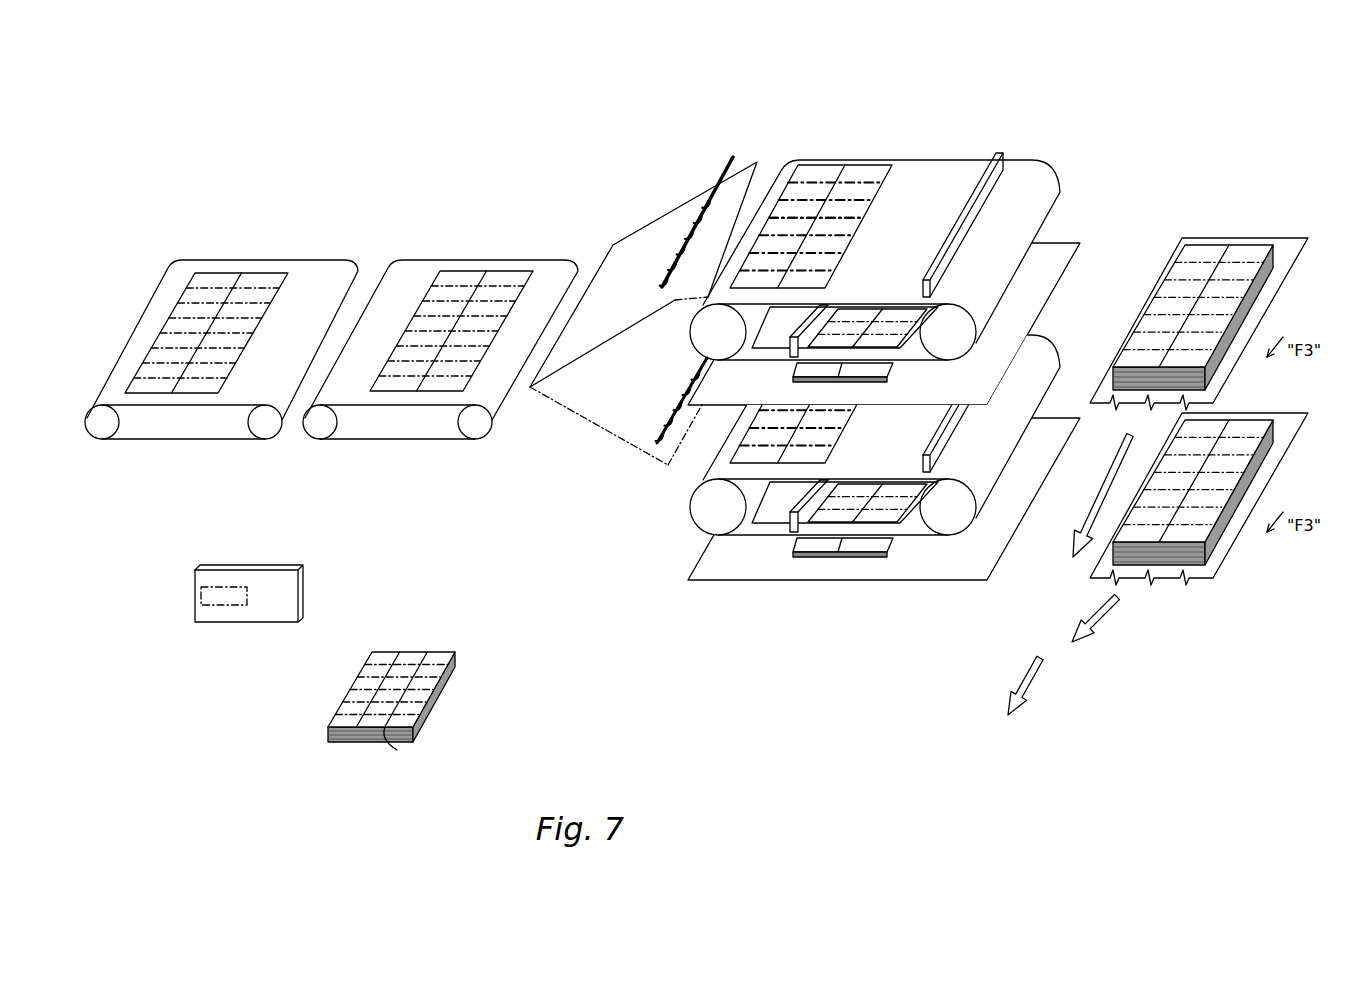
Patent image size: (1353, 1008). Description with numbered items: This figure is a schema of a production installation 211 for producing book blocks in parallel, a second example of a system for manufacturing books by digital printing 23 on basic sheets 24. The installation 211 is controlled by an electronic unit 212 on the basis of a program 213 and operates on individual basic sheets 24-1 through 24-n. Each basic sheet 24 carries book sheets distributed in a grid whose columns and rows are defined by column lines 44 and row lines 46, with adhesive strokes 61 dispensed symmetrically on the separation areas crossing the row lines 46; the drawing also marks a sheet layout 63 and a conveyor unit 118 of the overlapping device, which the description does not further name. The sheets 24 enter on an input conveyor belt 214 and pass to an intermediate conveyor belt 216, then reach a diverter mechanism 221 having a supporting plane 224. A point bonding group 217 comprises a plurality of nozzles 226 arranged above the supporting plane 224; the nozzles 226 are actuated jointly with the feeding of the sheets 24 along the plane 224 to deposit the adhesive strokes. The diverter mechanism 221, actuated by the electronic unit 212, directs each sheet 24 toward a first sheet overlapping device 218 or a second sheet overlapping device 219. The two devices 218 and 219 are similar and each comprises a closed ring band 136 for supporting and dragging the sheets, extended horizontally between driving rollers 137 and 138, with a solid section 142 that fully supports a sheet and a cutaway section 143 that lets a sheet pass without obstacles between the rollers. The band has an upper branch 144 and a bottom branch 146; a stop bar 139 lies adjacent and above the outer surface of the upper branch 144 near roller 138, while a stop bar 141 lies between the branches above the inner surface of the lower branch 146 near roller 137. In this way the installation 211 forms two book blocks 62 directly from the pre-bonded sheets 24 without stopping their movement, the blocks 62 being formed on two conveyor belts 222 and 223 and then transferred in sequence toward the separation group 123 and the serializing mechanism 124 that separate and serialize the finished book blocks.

The digital printing 23 is at (544, 776).
The basic sheets 24 is at (213, 281).
The basic sheet 24-n is at (446, 658).
The column lines 44 is at (1224, 252).
The row lines 46 is at (833, 266).
The adhesive strokes 61 is at (848, 217).
The book blocks 62 is at (830, 494).
The sheet layout 63 is at (824, 176).
The conveyor unit 118 is at (784, 151).
The separation group 123 is at (1070, 575).
The serializing mechanism 124 is at (1059, 685).
The closed ring band 136 is at (881, 320).
The driving roller 137 is at (708, 345).
The driving roller 138 is at (958, 352).
The stop bar 139 is at (977, 163).
The stop bar 141 is at (790, 348).
The solid section 142 is at (904, 158).
The cutaway section 143 is at (870, 346).
The upper branch 144 is at (938, 153).
The bottom branch 146 is at (746, 368).
The production installation 211 is at (1144, 135).
The electronic unit 212 is at (265, 596).
The program 213 is at (216, 600).
The input conveyor belt 214 is at (284, 246).
The intermediate conveyor belt 216 is at (509, 250).
The point bonding group 217 is at (712, 172).
The sheet overlapping device 218 is at (1053, 161).
The sheet overlapping device 219 is at (678, 498).
The diverter mechanism 221 is at (650, 175).
The conveyor belt 222 is at (1292, 232).
The conveyor belt 223 is at (1213, 574).
The supporting plane 224 is at (631, 238).
The nozzles 226 is at (656, 288).